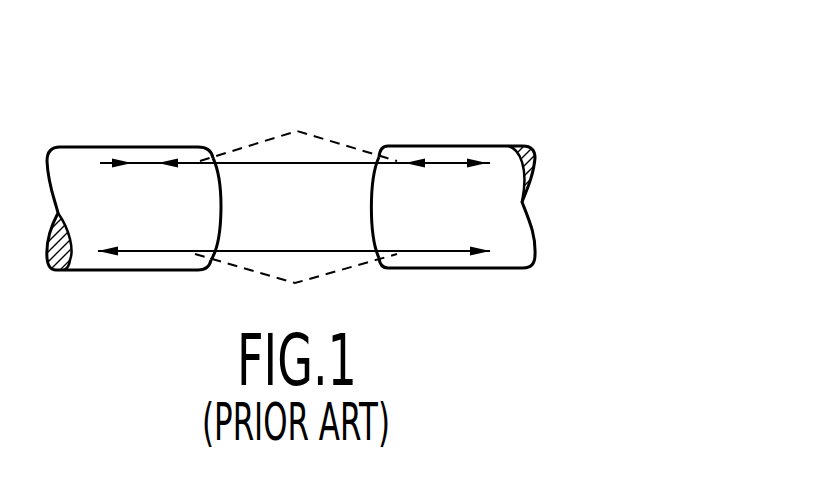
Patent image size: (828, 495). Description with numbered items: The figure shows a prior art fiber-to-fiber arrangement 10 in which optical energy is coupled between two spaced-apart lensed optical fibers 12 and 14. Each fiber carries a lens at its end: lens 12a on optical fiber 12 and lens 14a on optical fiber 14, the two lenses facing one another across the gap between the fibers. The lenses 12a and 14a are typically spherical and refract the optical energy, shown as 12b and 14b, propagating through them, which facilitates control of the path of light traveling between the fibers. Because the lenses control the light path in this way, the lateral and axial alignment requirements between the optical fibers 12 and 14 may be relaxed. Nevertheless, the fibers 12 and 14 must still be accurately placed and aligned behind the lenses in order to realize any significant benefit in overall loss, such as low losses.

The fiber-to-fiber arrangement 10 is at (521, 59).
The lensed optical fiber 12 is at (97, 153).
The lens 12a is at (228, 162).
The optical energy 12b is at (145, 160).
The lensed optical fiber 14 is at (499, 152).
The lens 14a is at (377, 156).
The optical energy 14b is at (418, 251).